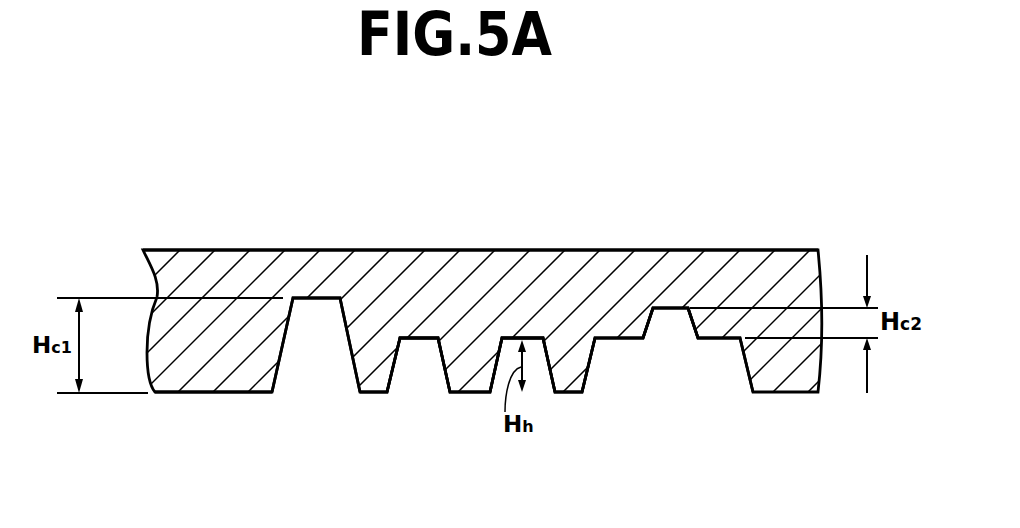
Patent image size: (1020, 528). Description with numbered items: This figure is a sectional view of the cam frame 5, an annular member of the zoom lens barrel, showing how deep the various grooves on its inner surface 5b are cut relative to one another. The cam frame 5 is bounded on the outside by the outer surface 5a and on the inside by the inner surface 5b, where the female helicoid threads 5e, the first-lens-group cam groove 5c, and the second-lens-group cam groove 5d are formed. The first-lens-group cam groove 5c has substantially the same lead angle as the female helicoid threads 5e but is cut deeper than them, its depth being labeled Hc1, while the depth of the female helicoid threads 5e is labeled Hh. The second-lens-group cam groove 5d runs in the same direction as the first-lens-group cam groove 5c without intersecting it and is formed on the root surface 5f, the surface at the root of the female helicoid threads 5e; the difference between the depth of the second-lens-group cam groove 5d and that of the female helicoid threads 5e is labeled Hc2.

The cam frame 5 is at (445, 248).
The outer surface 5a is at (275, 249).
The inner surface 5b is at (233, 396).
The first-lens-group cam groove 5c is at (324, 327).
The second-lens-group cam groove 5d is at (671, 327).
The female helicoid thread 5e is at (585, 432).
The root surface 5f is at (532, 345).